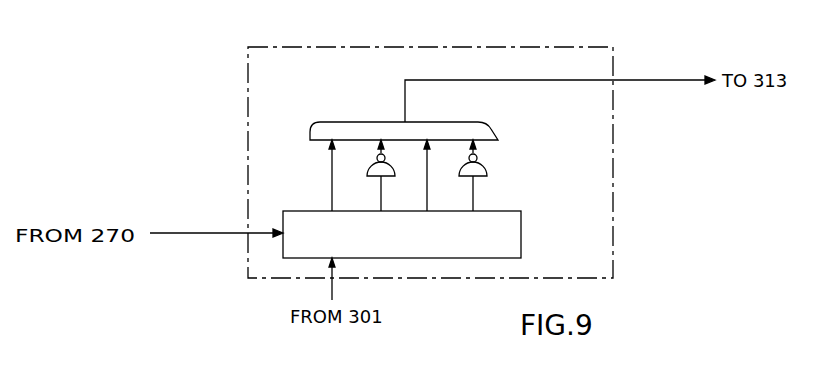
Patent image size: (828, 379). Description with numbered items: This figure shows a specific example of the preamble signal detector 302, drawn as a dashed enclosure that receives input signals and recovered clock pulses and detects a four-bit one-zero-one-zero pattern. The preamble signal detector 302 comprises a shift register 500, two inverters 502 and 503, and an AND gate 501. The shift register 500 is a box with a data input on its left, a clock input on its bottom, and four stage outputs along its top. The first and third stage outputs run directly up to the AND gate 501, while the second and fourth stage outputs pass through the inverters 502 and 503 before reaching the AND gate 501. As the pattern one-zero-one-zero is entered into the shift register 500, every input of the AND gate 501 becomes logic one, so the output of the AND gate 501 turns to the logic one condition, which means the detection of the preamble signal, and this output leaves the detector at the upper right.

The preamble signal detector 302 is at (580, 46).
The AND gate 501 is at (488, 128).
The inverter 502 is at (367, 175).
The inverter 503 is at (488, 172).
The shift register 500 is at (522, 238).